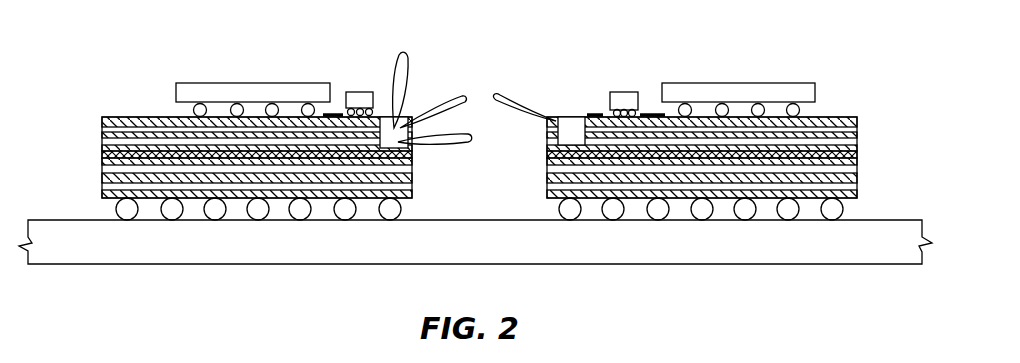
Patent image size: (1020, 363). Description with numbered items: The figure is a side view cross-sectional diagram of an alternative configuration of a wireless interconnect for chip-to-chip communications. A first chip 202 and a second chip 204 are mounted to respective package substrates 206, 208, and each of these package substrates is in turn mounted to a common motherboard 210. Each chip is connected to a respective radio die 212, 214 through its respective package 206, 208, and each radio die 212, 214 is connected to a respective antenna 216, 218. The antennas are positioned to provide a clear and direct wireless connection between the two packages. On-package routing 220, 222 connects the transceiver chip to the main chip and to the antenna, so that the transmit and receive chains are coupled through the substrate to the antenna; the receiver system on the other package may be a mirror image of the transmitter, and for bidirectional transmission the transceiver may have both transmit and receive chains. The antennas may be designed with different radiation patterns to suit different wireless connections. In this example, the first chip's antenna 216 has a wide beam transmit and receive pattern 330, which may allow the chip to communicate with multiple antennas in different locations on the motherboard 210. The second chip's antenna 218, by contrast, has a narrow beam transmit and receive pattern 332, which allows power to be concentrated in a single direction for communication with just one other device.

The first chip 202 is at (233, 83).
The second chip 204 is at (758, 83).
The package substrate 206 is at (115, 117).
The package substrate 208 is at (845, 117).
The motherboard 210 is at (907, 220).
The radio die 212 is at (370, 92).
The radio die 214 is at (623, 92).
The antenna 216 is at (398, 117).
The antenna 218 is at (557, 118).
The on-package routing 220 is at (335, 114).
The on-package routing 222 is at (596, 114).
The wide beam transmit and receive pattern 330 is at (412, 65).
The narrow beam transmit and receive pattern 332 is at (515, 113).